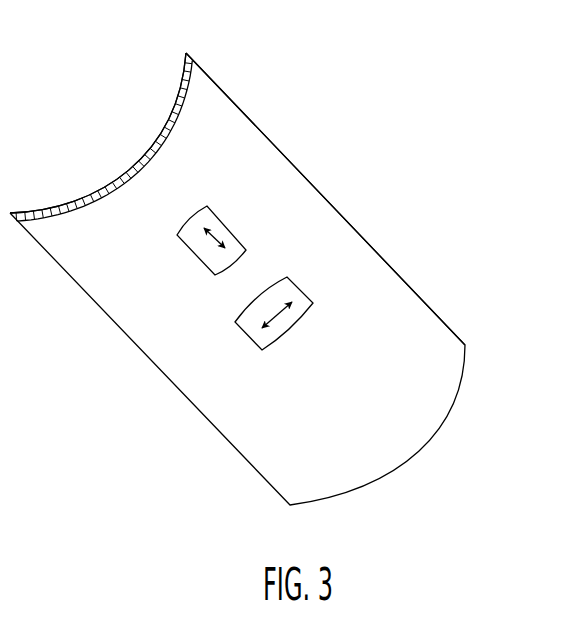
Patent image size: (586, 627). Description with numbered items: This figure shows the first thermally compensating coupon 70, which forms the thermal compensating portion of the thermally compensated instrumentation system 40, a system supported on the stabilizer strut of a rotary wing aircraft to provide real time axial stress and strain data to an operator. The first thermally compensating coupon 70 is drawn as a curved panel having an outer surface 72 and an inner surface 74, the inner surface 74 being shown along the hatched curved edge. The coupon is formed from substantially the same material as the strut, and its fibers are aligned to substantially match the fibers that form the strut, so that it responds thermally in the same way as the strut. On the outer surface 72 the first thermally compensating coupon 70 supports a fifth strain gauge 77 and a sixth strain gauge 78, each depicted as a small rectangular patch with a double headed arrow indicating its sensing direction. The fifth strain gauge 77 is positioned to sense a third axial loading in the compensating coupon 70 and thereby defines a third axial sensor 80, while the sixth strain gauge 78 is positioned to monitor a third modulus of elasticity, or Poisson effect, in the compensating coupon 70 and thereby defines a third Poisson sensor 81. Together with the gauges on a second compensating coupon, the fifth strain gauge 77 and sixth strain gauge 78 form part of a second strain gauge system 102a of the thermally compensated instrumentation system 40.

The thermally compensated instrumentation system 40 is at (388, 507).
The first thermally compensating coupon 70 is at (453, 410).
The outer surface 72 is at (217, 121).
The inner surface 74 is at (108, 183).
The fifth strain gauge 77 is at (195, 253).
The sixth strain gauge 78 is at (248, 338).
The third axial sensor 80 is at (215, 227).
The third Poisson sensor 81 is at (298, 307).
The second strain gauge system 102a is at (341, 300).